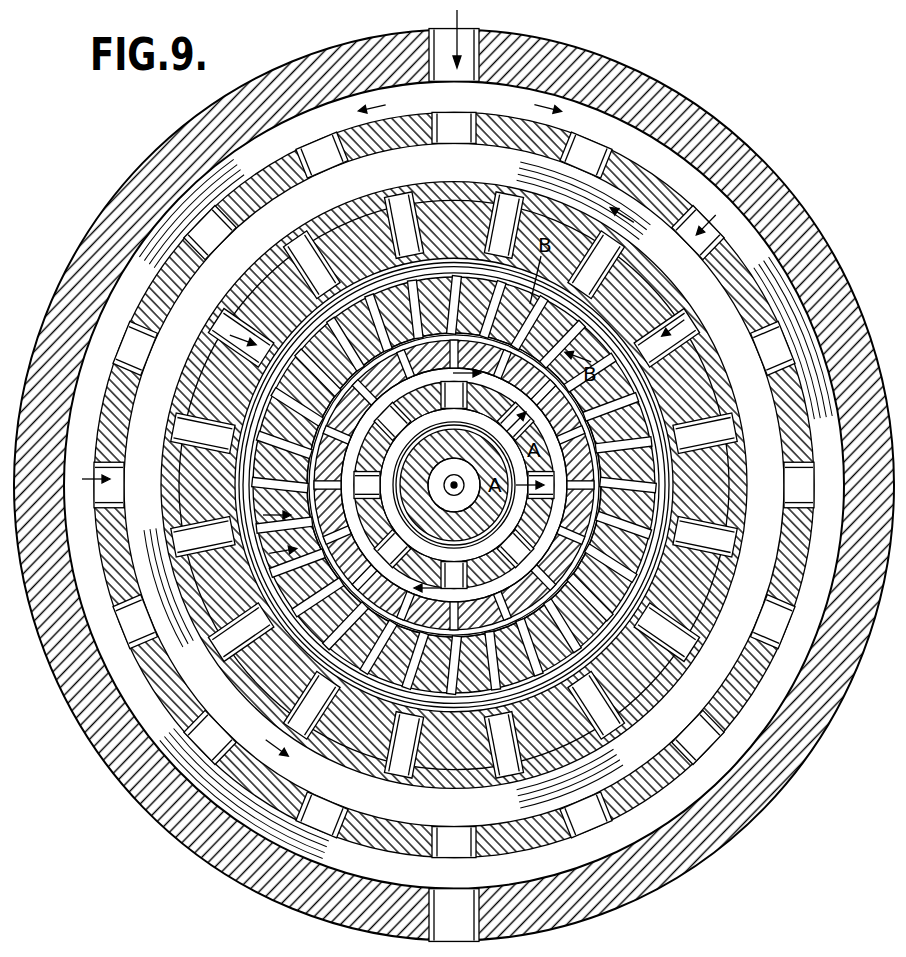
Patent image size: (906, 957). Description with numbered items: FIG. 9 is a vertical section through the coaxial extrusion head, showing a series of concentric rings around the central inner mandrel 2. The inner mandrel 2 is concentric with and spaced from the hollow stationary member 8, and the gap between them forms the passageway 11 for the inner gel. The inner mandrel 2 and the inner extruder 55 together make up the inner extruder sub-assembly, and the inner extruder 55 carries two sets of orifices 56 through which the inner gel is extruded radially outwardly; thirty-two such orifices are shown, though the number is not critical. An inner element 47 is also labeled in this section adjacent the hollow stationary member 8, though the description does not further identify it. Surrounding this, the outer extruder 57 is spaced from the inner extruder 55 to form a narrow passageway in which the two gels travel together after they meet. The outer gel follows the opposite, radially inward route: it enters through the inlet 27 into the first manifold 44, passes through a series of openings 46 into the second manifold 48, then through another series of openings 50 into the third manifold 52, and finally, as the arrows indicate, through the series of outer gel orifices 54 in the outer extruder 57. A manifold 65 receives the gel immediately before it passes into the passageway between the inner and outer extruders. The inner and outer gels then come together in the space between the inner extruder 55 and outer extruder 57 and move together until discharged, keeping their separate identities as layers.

The inlet 27 is at (442, 48).
The first manifold 44 is at (651, 156).
The openings 46 is at (456, 122).
The second manifold 48 is at (668, 258).
The openings 50 is at (506, 231).
The outer gel orifices 54 is at (560, 373).
The manifold 65 is at (640, 492).
The inner extruder 55 is at (575, 552).
The outer extruder 57 is at (592, 644).
The third manifold 52 is at (536, 688).
The orifices 56 is at (497, 605).
The inner mandrel 2 is at (420, 405).
The inner port block 47 is at (454, 572).
The hollow stationary member 8 is at (477, 527).
The passageway 11 is at (505, 507).